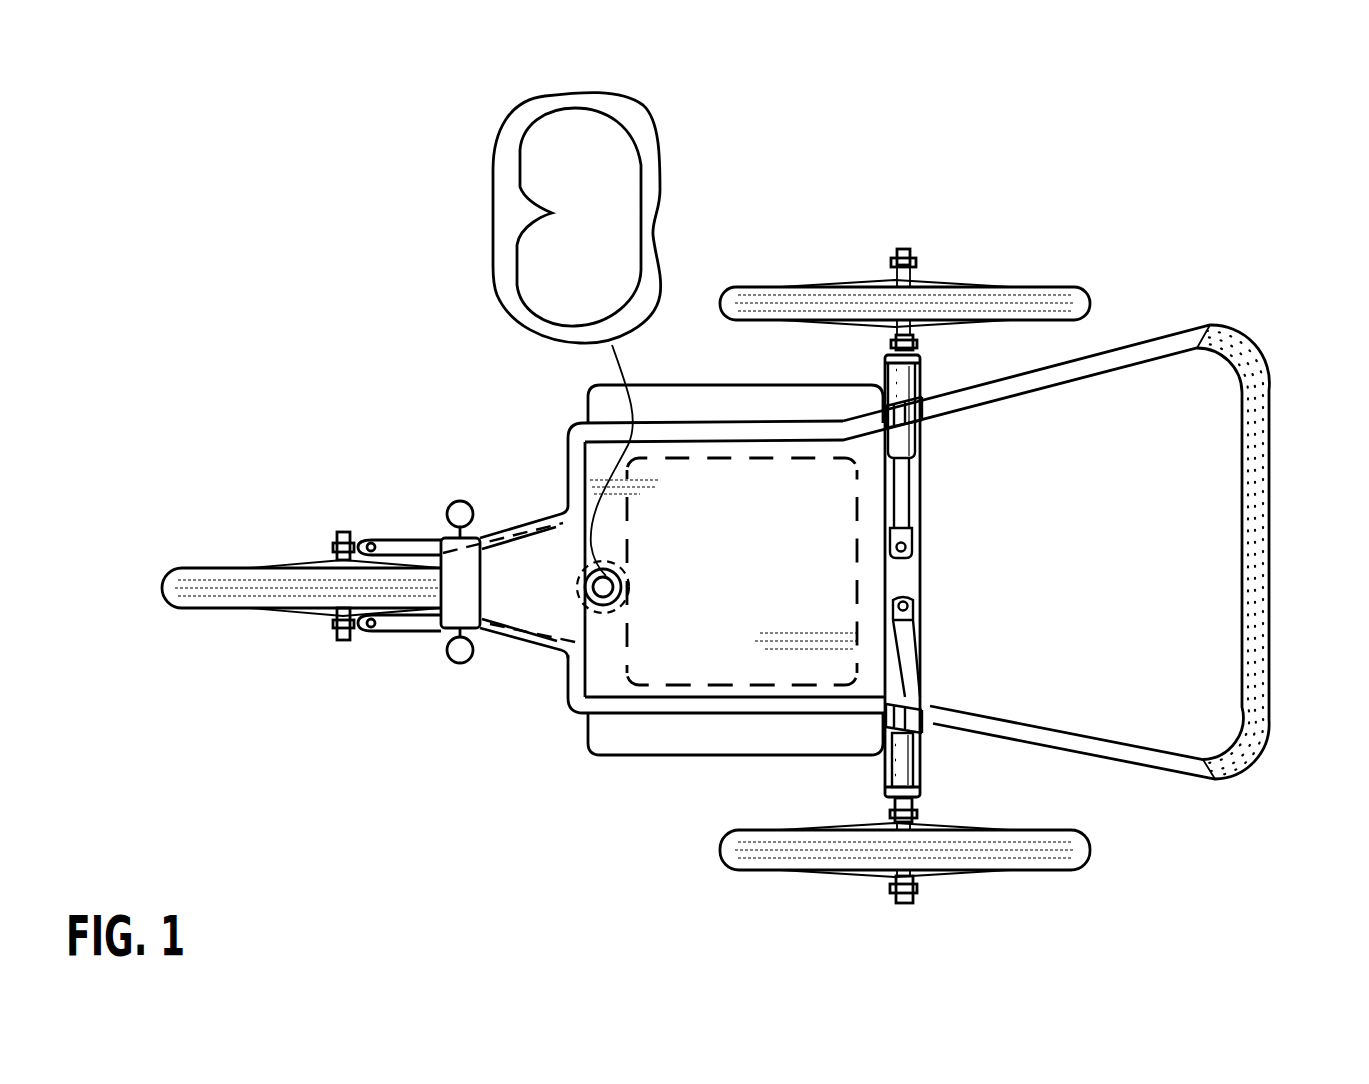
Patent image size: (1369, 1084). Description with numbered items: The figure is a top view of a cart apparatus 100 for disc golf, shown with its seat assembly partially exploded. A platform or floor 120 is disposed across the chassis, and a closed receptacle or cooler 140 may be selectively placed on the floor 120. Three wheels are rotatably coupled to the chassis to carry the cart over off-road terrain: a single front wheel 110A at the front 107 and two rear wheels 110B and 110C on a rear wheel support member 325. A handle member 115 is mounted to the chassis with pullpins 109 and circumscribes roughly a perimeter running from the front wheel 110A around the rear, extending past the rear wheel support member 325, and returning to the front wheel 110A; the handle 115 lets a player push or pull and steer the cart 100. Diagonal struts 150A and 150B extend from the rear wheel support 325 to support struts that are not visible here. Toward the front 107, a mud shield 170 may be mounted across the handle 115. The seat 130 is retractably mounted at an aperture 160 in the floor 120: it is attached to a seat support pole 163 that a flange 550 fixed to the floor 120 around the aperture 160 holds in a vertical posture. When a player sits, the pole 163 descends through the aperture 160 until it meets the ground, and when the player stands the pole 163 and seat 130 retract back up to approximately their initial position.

The cart apparatus 100 is at (773, 181).
The front 107 is at (408, 535).
The pullpins 109 is at (462, 499).
The front wheel 110A is at (193, 608).
The rear wheel 110B is at (1023, 857).
The rear wheel 110C is at (1050, 297).
The handle member 115 is at (1268, 603).
The floor 120 is at (627, 752).
The seat 130 is at (538, 153).
The cooler 140 is at (742, 460).
The diagonal strut 150A is at (902, 650).
The diagonal strut 150B is at (902, 500).
The aperture 160 is at (603, 590).
The seat support pole 163 is at (627, 578).
The mud shield 170 is at (537, 557).
The rear wheel support member 325 is at (908, 763).
The flange 550 is at (622, 595).